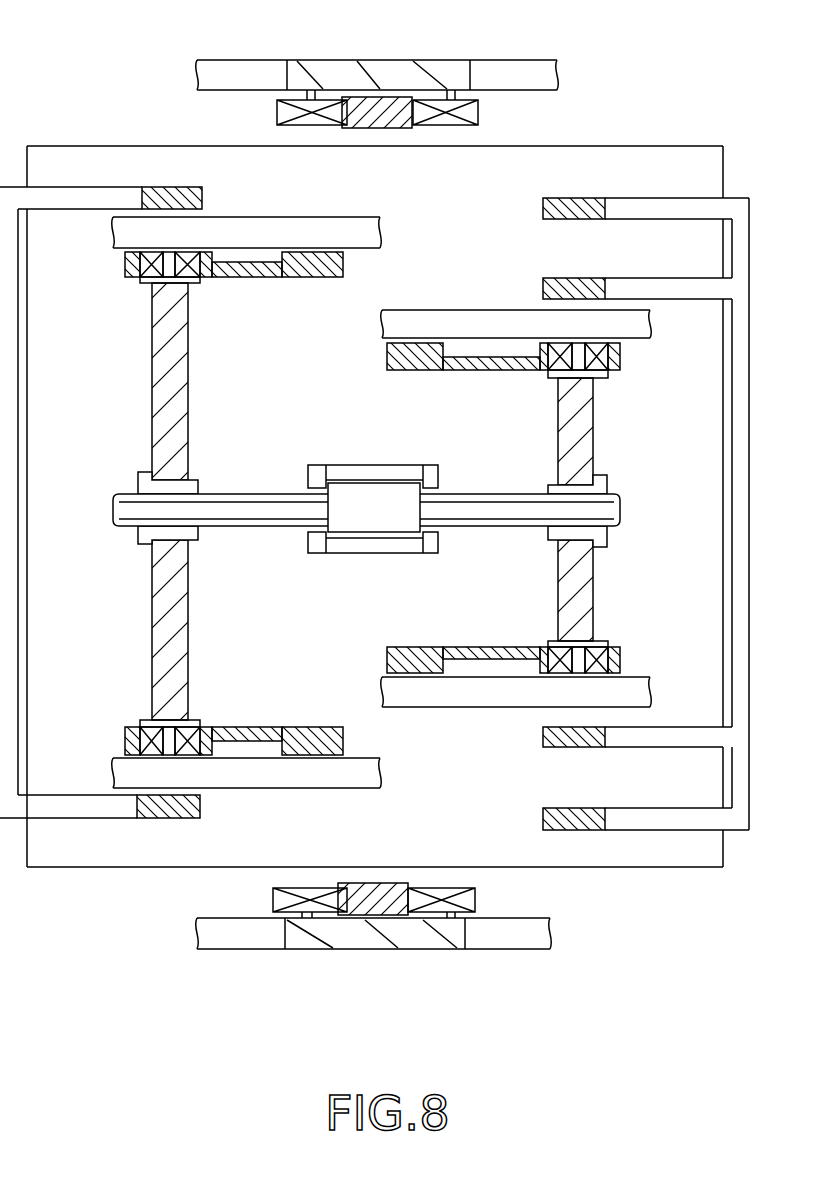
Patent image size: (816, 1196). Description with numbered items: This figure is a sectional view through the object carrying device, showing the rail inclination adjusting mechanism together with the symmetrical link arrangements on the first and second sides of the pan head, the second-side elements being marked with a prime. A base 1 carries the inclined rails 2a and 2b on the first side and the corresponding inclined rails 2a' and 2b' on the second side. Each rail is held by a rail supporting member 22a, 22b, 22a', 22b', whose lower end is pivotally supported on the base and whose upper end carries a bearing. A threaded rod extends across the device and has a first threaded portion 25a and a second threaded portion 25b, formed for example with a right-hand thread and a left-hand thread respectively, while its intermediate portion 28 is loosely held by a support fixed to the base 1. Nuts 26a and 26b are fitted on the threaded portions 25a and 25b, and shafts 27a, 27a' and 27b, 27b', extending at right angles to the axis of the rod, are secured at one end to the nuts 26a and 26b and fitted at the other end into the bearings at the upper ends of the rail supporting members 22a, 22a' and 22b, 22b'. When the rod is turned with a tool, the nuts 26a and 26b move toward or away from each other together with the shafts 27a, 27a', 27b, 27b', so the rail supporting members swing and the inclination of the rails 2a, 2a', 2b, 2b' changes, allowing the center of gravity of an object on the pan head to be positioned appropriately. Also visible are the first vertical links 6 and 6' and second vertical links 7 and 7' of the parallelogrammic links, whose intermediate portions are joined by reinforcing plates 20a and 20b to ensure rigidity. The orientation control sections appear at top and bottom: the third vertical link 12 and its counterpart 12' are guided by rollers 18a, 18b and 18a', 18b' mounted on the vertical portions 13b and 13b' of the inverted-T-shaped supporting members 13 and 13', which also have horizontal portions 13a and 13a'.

The base 1 is at (272, 606).
The inclined rail 2a is at (516, 717).
The inclined rail 2a' is at (516, 301).
The inclined rail 2b is at (269, 773).
The inclined rail 2b' is at (276, 231).
The first vertical link 6 is at (551, 780).
The first vertical link 6' is at (551, 249).
The second vertical link 7 is at (165, 828).
The second vertical link 7' is at (194, 200).
The third vertical link 12 is at (381, 941).
The third vertical link 12' is at (371, 69).
The supporting member 13 is at (423, 936).
The supporting member 13' is at (431, 79).
The horizontal portion 13a is at (505, 969).
The horizontal portion 13a' is at (506, 49).
The vertical portion 13b is at (375, 965).
The vertical portion 13b' is at (378, 50).
The roller 18a is at (479, 903).
The roller 18a' is at (489, 119).
The roller 18b is at (270, 900).
The roller 18b' is at (271, 116).
The reinforcing plate 20a is at (735, 486).
The reinforcing plate 20b is at (10, 415).
The rail supporting member 22a is at (503, 631).
The rail supporting member 22a' is at (503, 390).
The rail supporting member 22b is at (234, 714).
The rail supporting member 22b' is at (234, 296).
The first threaded portion 25a is at (497, 494).
The second threaded portion 25b is at (259, 493).
The nut 26a is at (606, 540).
The nut 26b is at (136, 537).
The shaft 27a is at (610, 590).
The shaft 27a' is at (615, 431).
The shaft 27b is at (133, 630).
The shaft 27b' is at (138, 381).
The intermediate portion 28 is at (373, 485).